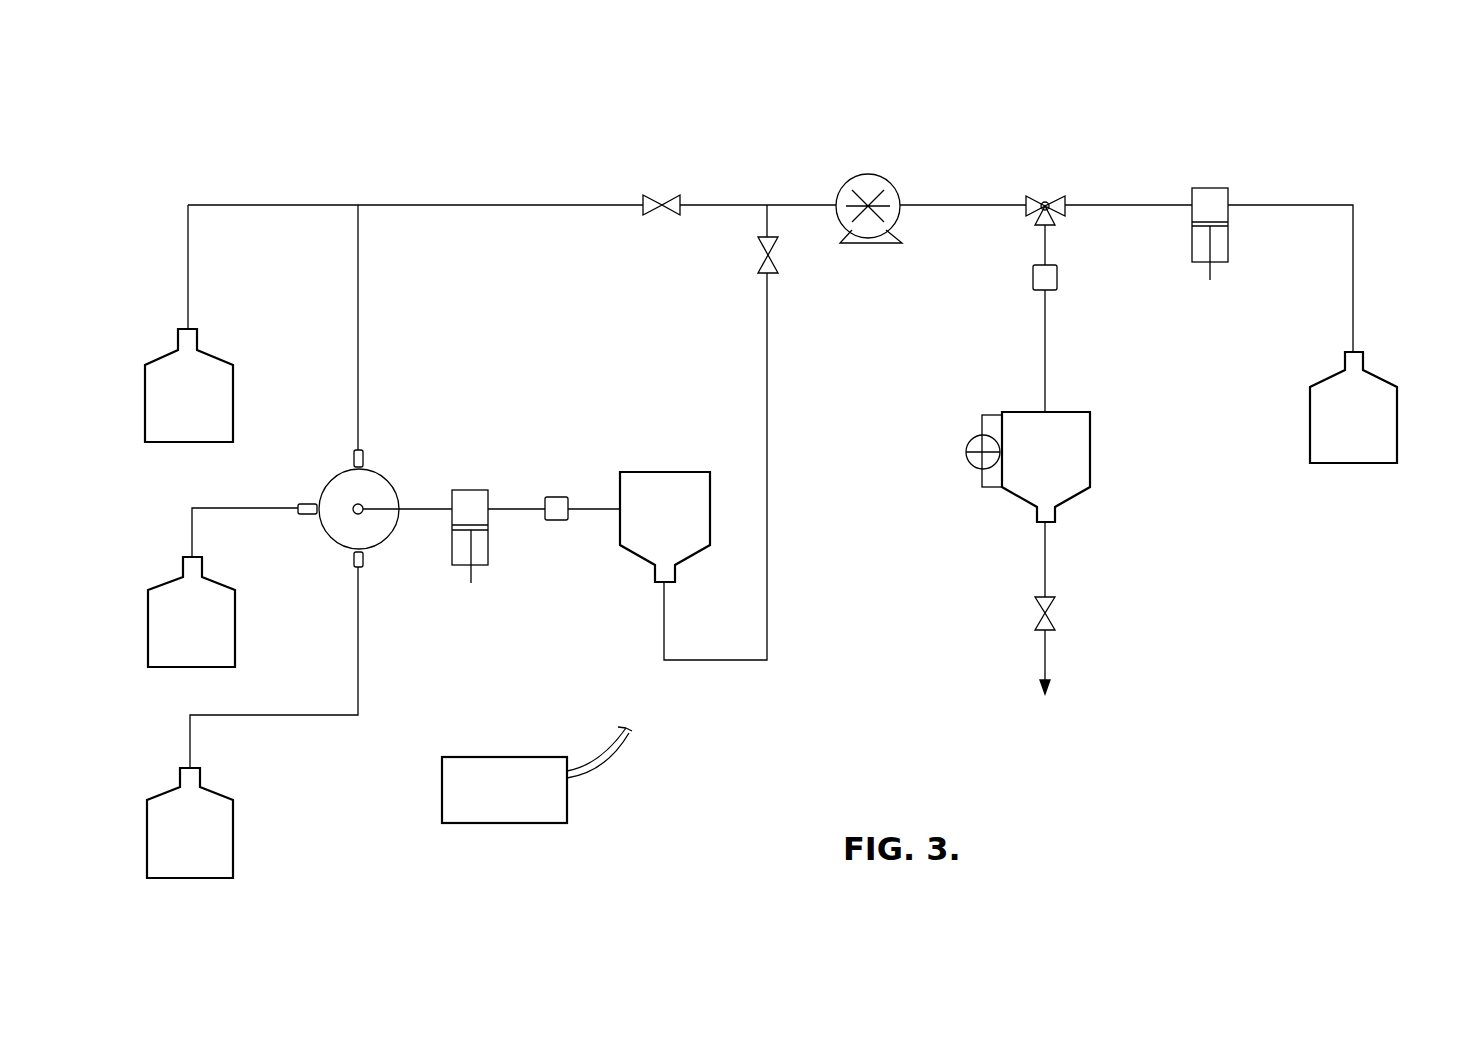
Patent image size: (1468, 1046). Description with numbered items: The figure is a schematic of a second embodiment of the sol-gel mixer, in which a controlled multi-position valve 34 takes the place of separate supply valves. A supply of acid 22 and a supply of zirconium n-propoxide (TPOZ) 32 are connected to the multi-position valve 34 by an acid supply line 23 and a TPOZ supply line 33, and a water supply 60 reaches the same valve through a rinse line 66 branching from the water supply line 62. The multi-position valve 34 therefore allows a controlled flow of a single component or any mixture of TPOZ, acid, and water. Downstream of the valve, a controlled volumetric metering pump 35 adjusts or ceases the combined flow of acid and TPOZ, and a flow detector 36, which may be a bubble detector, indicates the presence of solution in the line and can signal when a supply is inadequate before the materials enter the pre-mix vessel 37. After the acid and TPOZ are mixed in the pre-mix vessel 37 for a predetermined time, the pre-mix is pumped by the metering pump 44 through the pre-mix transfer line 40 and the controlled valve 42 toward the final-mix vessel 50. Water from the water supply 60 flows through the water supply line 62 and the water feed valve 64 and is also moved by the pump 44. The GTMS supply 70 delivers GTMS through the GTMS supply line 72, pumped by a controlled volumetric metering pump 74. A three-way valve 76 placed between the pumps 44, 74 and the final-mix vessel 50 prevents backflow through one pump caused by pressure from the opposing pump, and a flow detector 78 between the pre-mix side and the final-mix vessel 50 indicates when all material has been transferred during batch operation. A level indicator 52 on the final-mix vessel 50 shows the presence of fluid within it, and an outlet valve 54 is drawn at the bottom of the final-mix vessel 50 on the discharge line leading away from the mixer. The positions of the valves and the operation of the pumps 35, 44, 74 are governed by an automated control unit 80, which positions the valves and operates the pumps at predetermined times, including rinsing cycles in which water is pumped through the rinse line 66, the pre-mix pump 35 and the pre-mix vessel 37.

The acid supply 22 is at (222, 635).
The acid supply line 23 is at (174, 532).
The zirconium n-propoxide (TPOZ) supply 32 is at (226, 853).
The TPOZ supply line 33 is at (311, 707).
The controlled multi-position valve 34 is at (378, 475).
The controlled volumetric metering pump 35 is at (490, 545).
The flow detector 36 is at (548, 521).
The pre-mix vessel 37 is at (646, 470).
The pre-mix transfer line 40 is at (809, 630).
The controlled valve 42 is at (770, 256).
The metering pump 44 is at (896, 188).
The final-mix vessel 50 is at (1092, 437).
The level indicator 52 is at (966, 459).
The outlet valve 54 is at (1050, 604).
The water supply 60 is at (152, 360).
The water supply line 62 is at (496, 192).
The water feed valve 64 is at (650, 200).
The rinse line 66 is at (406, 276).
The GTMS supply 70 is at (1380, 372).
The GTMS supply line 72 is at (1396, 279).
The controlled volumetric metering pump 74 is at (1212, 185).
The three-way valve 76 is at (1048, 198).
The flow detector 78 is at (1057, 280).
The automated control unit 80 is at (498, 757).